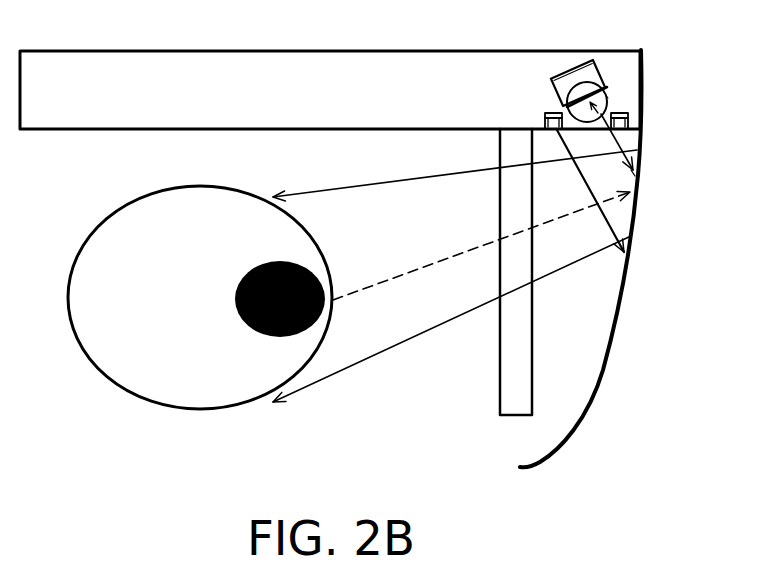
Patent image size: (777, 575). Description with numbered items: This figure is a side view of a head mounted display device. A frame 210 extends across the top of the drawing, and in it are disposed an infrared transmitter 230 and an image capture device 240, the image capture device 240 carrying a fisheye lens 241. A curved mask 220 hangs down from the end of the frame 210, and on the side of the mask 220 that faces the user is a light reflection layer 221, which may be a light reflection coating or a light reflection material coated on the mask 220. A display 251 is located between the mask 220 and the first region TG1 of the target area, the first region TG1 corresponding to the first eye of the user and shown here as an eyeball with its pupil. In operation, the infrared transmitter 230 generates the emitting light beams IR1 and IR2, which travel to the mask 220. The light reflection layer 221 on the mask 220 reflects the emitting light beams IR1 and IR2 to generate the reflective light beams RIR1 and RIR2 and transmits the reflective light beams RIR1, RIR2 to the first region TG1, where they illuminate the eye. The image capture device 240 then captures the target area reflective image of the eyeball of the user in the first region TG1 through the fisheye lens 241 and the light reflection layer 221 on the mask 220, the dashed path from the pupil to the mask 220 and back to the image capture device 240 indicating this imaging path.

The frame 210 is at (276, 50).
The mask 220 is at (603, 378).
The light reflection layer 221 is at (632, 174).
The infrared transmitter 230 is at (545, 116).
The image capture device 240 is at (567, 68).
The fisheye lens 241 is at (608, 97).
The display 251 is at (500, 387).
The emitting light beam IR1 is at (612, 223).
The emitting light beam IR2 is at (612, 143).
The reflective light beam RIR1 is at (380, 182).
The reflective light beam RIR2 is at (362, 364).
The first region TG1 is at (80, 398).